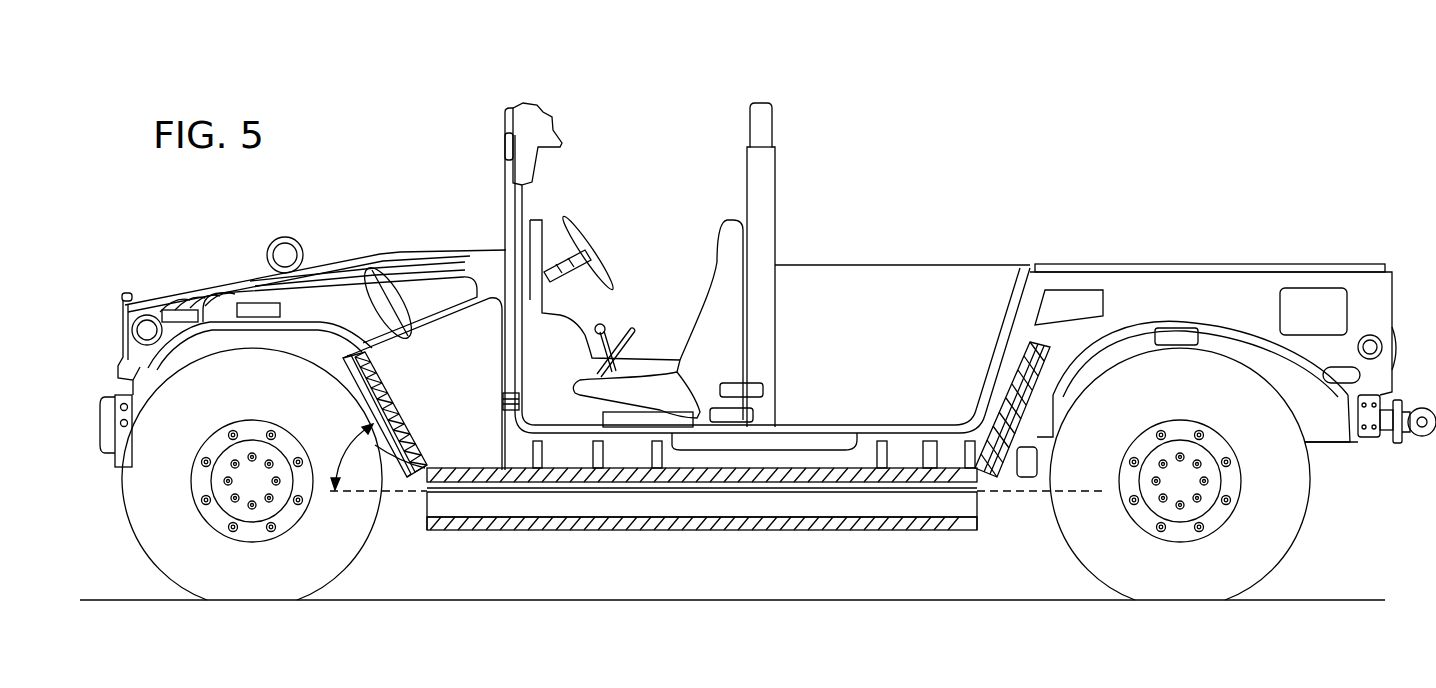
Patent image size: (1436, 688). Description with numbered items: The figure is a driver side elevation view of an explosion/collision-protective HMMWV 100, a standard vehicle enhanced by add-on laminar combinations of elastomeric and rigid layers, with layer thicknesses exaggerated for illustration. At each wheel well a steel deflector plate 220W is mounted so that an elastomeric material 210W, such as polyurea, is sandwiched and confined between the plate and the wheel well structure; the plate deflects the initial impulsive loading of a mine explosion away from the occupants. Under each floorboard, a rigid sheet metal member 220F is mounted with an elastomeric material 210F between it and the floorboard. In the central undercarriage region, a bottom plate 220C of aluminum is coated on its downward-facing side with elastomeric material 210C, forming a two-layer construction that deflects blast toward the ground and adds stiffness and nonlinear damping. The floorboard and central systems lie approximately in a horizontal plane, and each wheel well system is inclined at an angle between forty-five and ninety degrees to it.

The explosion/collision-protective HMMWV 100 is at (1103, 115).
The wheel well elastomeric material 210W is at (380, 376).
The wheel well rigid member 220W is at (349, 365).
The floorboard elastomeric material 210F is at (452, 467).
The floorboard rigid member 220F is at (732, 486).
The central elastomeric material 210C is at (890, 522).
The bottom plate 220C is at (592, 508).